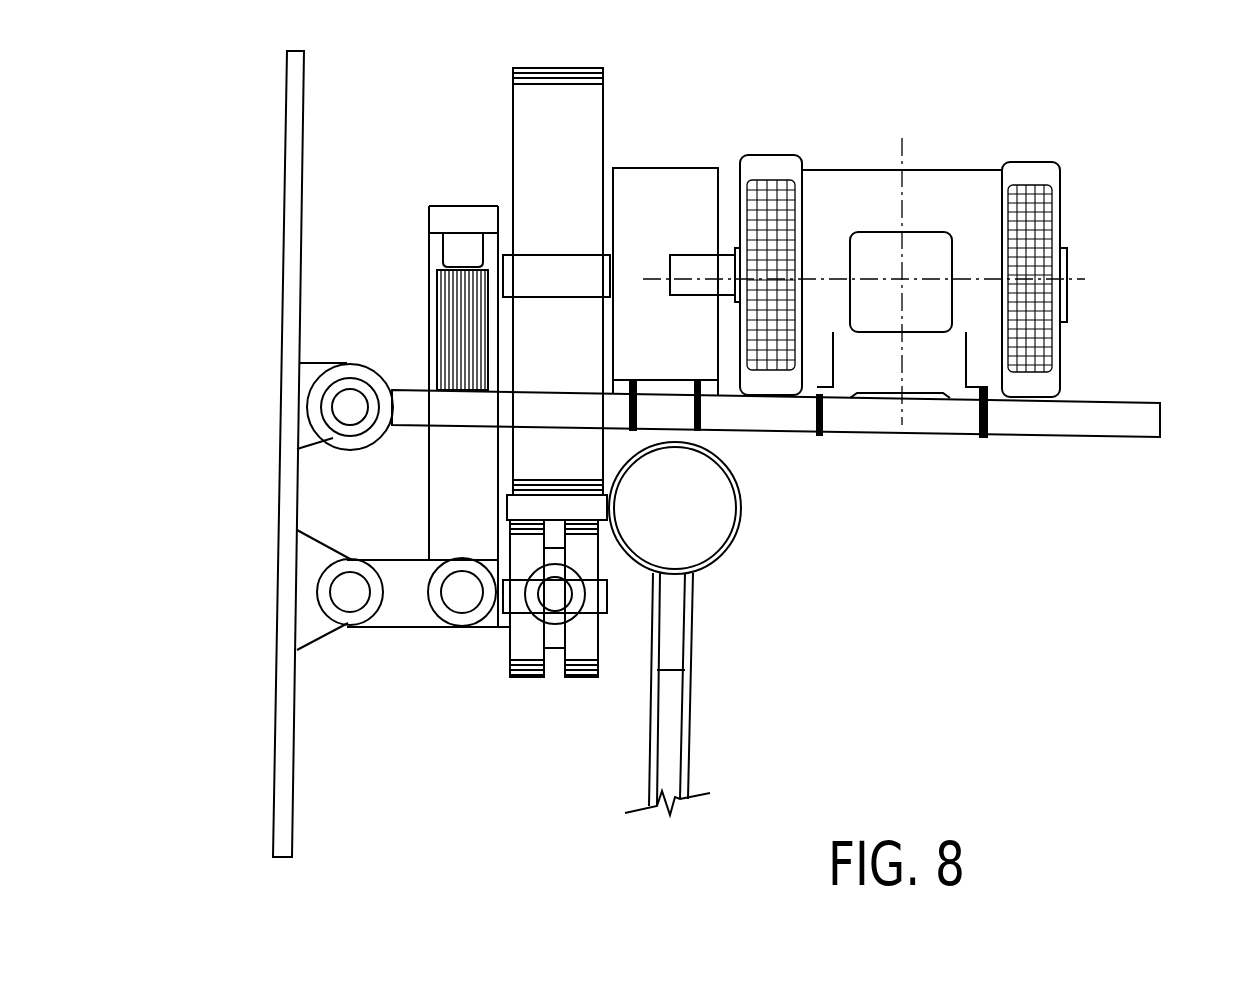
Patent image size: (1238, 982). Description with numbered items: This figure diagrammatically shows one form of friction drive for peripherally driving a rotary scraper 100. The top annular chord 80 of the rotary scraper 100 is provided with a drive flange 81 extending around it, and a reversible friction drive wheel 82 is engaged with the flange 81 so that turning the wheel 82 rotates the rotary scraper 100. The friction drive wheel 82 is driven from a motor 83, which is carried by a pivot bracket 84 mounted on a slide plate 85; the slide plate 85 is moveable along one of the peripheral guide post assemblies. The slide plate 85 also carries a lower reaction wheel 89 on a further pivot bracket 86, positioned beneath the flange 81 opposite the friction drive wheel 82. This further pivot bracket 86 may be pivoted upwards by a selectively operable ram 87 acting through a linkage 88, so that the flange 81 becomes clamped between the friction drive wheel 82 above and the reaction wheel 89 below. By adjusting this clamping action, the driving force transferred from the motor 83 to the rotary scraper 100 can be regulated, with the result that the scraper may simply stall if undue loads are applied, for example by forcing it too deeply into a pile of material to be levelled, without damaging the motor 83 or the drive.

The top annular chord 80 is at (725, 522).
The drive flange 81 is at (587, 508).
The reversible friction drive wheel 82 is at (582, 120).
The motor 83 is at (947, 188).
The pivot bracket 84 is at (1103, 415).
The slide plate 85 is at (288, 473).
The further pivot bracket 86 is at (405, 610).
The selectively operable ram 87 is at (448, 305).
The linkage 88 is at (458, 473).
The lower reaction wheel 89 is at (522, 648).
The rotary scraper 100 is at (589, 779).